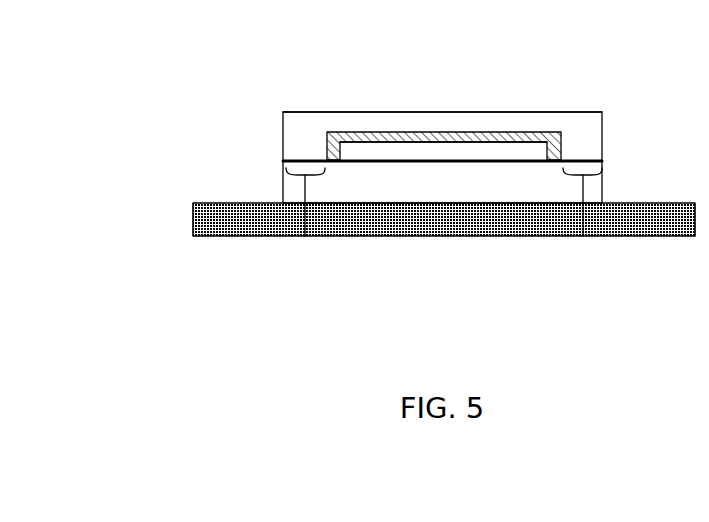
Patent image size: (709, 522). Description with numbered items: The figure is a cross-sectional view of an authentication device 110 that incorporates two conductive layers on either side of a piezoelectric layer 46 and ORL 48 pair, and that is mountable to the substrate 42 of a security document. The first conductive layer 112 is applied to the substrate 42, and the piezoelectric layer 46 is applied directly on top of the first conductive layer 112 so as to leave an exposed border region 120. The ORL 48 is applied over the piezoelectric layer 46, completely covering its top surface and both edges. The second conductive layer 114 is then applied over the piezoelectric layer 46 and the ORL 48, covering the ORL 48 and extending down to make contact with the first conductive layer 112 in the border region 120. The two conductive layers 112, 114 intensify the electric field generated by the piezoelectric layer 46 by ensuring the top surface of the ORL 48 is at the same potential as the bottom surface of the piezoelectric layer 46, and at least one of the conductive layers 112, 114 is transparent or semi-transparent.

The substrate 42 is at (443, 237).
The piezoelectric layer 46 is at (530, 150).
The ORL 48 is at (382, 134).
The authentication device 110 is at (613, 108).
The first conductive layer 112 is at (283, 181).
The second conductive layer 114 is at (443, 112).
The exposed border region 120 is at (303, 237).